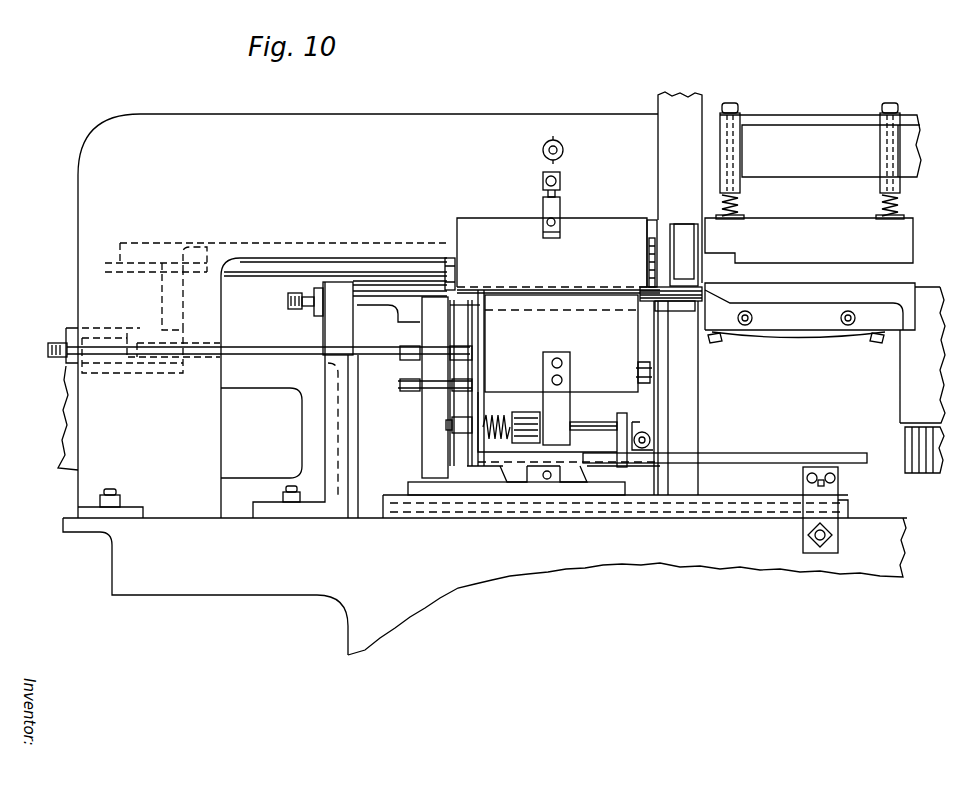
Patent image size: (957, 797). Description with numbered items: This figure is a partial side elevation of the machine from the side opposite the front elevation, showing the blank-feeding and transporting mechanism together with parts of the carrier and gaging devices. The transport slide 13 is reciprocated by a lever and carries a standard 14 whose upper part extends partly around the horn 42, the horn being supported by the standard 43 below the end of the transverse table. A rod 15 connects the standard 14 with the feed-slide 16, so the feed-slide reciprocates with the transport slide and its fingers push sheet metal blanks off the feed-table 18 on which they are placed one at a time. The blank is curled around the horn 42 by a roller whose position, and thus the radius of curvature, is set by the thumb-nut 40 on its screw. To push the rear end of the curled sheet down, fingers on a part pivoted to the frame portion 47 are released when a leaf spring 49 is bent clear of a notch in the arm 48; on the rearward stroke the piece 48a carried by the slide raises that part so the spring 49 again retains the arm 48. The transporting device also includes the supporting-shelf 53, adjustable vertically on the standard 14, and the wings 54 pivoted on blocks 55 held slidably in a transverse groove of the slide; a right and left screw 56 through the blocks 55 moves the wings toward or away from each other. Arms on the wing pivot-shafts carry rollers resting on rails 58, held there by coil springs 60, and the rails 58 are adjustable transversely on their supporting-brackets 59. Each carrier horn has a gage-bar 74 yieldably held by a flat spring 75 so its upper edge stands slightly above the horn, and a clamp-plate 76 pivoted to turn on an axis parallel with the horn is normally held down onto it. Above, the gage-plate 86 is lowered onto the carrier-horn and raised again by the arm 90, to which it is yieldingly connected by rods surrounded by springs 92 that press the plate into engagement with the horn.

The transport slide 13 is at (408, 487).
The standard 14 is at (435, 387).
The rod 15 is at (378, 357).
The feed-slide 16 is at (68, 368).
The feed-table 18 is at (246, 264).
The thumb-nut 40 is at (563, 151).
The horn 42 is at (377, 315).
The standard 43 is at (328, 327).
The frame portion 47 is at (552, 252).
The arm 48 is at (560, 198).
The piece 48a is at (484, 344).
The leaf spring 49 is at (560, 180).
The supporting-shelf 53 is at (645, 406).
The wings 54 is at (561, 370).
The blocks 55 is at (567, 478).
The right and left screw 56 is at (542, 477).
The rails 58 is at (730, 458).
The supporting-brackets 59 is at (838, 490).
The coil springs 60 is at (490, 412).
The gage-bar 74 is at (791, 330).
The flat spring 75 is at (878, 337).
The clamp-plate 76 is at (851, 274).
The gage-plate 86 is at (820, 238).
The arm 90 is at (820, 146).
The springs 92 is at (903, 208).